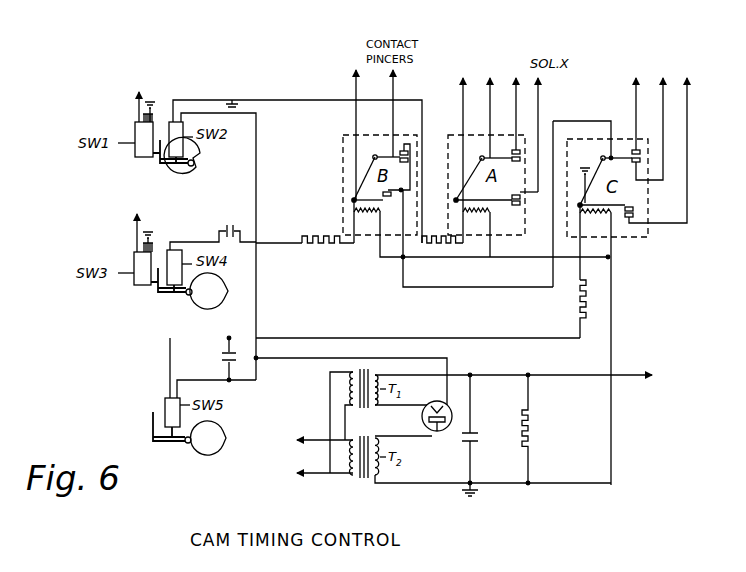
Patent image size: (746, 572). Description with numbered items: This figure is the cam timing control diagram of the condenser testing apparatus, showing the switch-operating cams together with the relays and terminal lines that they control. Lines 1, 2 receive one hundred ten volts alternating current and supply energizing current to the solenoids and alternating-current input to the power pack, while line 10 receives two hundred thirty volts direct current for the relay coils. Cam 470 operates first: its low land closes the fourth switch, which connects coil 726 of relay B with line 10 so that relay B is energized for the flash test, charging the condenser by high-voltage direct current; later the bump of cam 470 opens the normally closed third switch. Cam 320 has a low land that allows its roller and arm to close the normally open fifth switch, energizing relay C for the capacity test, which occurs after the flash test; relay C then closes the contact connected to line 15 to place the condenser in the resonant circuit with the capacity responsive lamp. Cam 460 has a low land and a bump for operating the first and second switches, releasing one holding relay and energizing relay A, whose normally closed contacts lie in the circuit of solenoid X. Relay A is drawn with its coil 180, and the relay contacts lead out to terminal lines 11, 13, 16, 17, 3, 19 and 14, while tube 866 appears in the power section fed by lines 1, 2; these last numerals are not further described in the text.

The terminal lead to switch SW1 14 is at (139, 97).
The terminal lead of relay B 11 is at (349, 133).
The terminal lead of relay A coil 13 is at (464, 134).
The terminal lead of relay A armature 16 is at (492, 107).
The terminal lead of relay A contact 17 is at (518, 103).
The line 15 is at (637, 103).
The terminal lead of relay C 3 is at (651, 118).
The terminal lead of relay C lower contact 19 is at (663, 140).
The line 10 is at (641, 376).
The line 1 is at (318, 441).
The line 2 is at (316, 475).
The cam 460 is at (220, 183).
The cam 470 is at (217, 308).
The cam 320 is at (216, 455).
The coil 726 is at (365, 232).
The coil of relay A 180 is at (475, 232).
The rectifier tube 866 is at (437, 429).